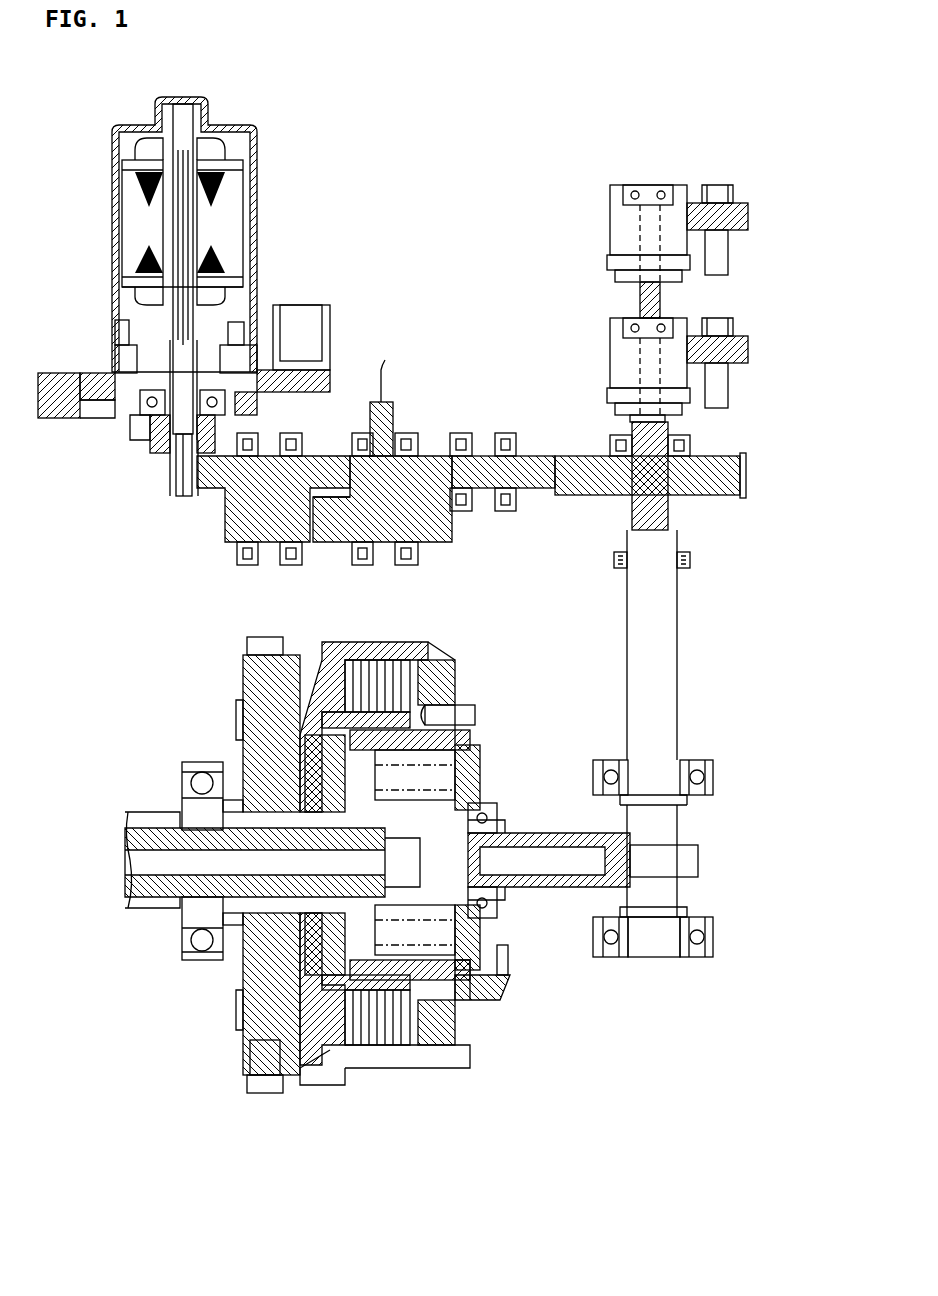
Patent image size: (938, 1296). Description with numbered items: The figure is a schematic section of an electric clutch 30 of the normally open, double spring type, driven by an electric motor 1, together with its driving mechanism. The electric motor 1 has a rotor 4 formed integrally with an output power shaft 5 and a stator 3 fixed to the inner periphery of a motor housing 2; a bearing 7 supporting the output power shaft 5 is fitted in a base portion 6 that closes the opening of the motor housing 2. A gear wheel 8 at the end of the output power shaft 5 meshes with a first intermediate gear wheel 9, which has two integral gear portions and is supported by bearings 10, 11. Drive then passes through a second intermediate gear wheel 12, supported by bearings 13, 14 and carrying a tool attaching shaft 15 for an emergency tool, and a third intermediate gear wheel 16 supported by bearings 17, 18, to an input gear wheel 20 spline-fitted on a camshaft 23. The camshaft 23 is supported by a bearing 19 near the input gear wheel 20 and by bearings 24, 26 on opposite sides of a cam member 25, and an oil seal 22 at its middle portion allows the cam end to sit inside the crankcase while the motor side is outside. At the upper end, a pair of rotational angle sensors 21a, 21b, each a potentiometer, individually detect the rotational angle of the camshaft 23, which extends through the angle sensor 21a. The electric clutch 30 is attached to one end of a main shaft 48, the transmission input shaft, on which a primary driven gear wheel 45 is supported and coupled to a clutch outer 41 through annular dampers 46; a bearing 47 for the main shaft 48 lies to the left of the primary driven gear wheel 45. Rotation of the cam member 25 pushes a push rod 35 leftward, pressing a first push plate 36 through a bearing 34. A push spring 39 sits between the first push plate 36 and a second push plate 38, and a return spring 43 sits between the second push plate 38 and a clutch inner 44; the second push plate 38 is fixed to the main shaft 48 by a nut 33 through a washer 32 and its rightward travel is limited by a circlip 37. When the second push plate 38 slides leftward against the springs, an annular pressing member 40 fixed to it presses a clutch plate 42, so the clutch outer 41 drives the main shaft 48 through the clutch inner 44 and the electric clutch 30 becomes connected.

The electric motor 1 is at (130, 122).
The motor housing 2 is at (236, 132).
The stator 3 is at (122, 198).
The rotor 4 is at (140, 240).
The output power shaft 5 is at (180, 300).
The base portion 6 is at (90, 378).
The bearing 7 is at (140, 410).
The gear wheel 8 is at (172, 480).
The first intermediate gear wheel 9 is at (232, 518).
The bearing 10 is at (290, 436).
The bearing 11 is at (290, 566).
The second intermediate gear wheel 12 is at (400, 528).
The bearing 13 is at (402, 418).
The bearing 14 is at (360, 566).
The tool attaching shaft 15 is at (386, 370).
The third intermediate gear wheel 16 is at (530, 445).
The bearing 17 is at (503, 430).
The bearing 18 is at (510, 514).
The bearing 19 is at (612, 438).
The input gear wheel 20 is at (577, 497).
The rotational angle sensor 21a is at (598, 353).
The rotational angle sensor 21b is at (628, 176).
The oil seal 22 is at (690, 560).
The camshaft 23 is at (668, 640).
The bearing 24 is at (704, 776).
The cam member 25 is at (700, 860).
The bearing 26 is at (704, 936).
The electric clutch 30 is at (536, 1050).
The washer 32 is at (450, 810).
The nut 33 is at (420, 812).
The bearing 34 is at (497, 816).
The push rod 35 is at (568, 888).
The first push plate 36 is at (492, 936).
The circlip 37 is at (500, 970).
The second push plate 38 is at (487, 1000).
The push spring 39 is at (470, 1000).
The annular pressing member 40 is at (445, 1068).
The clutch outer 41 is at (415, 1082).
The clutch plate 42 is at (375, 1060).
The return spring 43 is at (340, 1062).
The clutch inner 44 is at (310, 1070).
The primary driven gear wheel 45 is at (250, 1062).
The annular damper 46 is at (252, 690).
The bearing 47 is at (202, 783).
The main shaft 48 is at (147, 825).